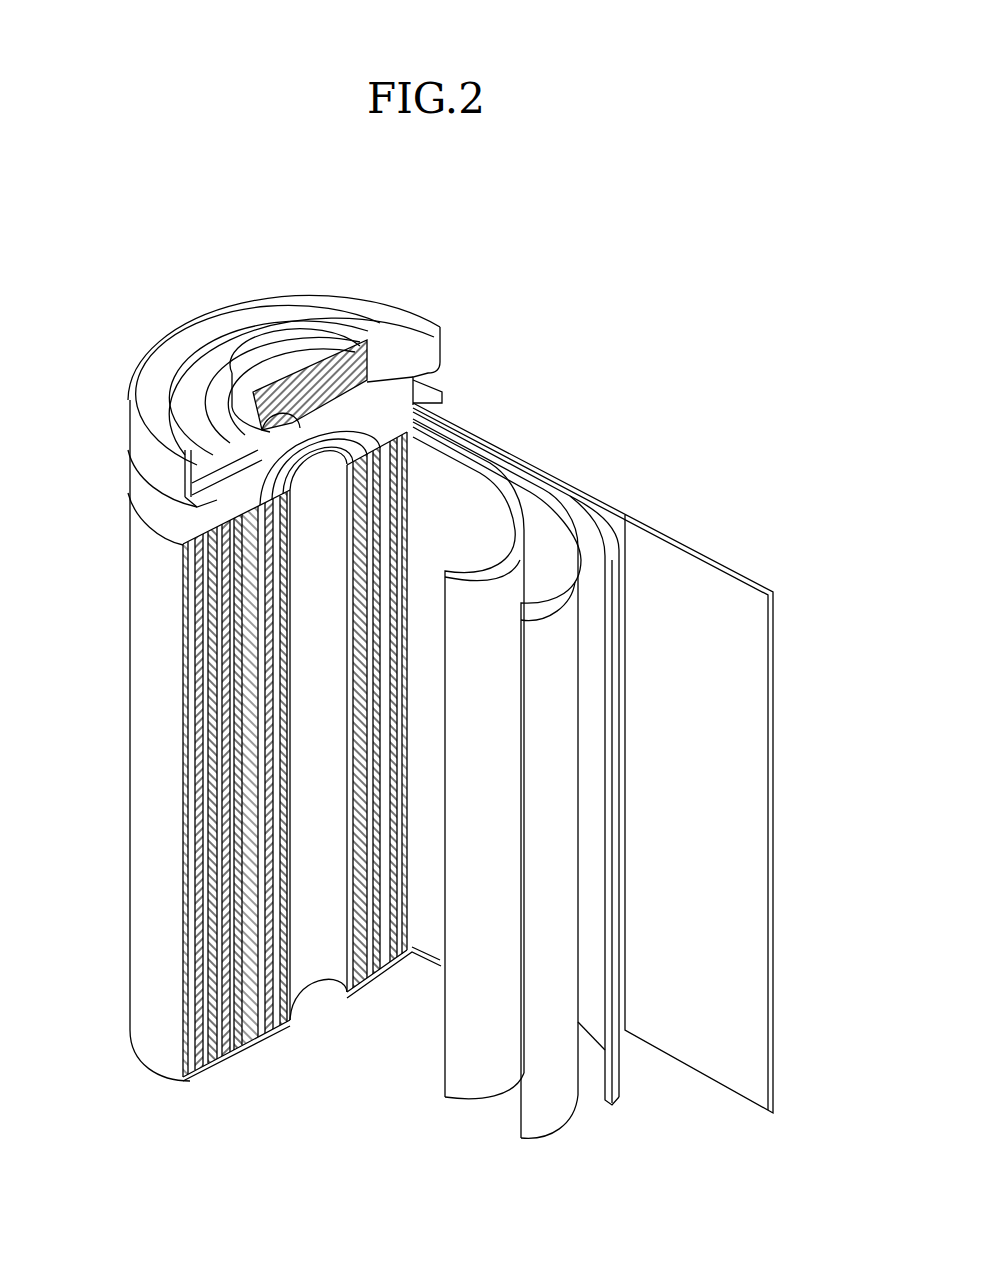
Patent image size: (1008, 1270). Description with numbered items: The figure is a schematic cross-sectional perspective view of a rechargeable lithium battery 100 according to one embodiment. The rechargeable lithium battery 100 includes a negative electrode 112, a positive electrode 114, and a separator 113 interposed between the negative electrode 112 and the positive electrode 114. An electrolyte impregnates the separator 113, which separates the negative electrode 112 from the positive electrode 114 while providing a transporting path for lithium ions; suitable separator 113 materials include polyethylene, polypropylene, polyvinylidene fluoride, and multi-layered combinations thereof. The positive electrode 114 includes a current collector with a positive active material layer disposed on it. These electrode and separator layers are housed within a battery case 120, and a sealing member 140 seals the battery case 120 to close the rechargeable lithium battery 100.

The rechargeable lithium battery 100 is at (462, 264).
The negative electrode 112 is at (768, 813).
The separator 113 is at (497, 477).
The positive electrode 114 is at (550, 513).
The battery case 120 is at (140, 748).
The sealing member 140 is at (298, 338).